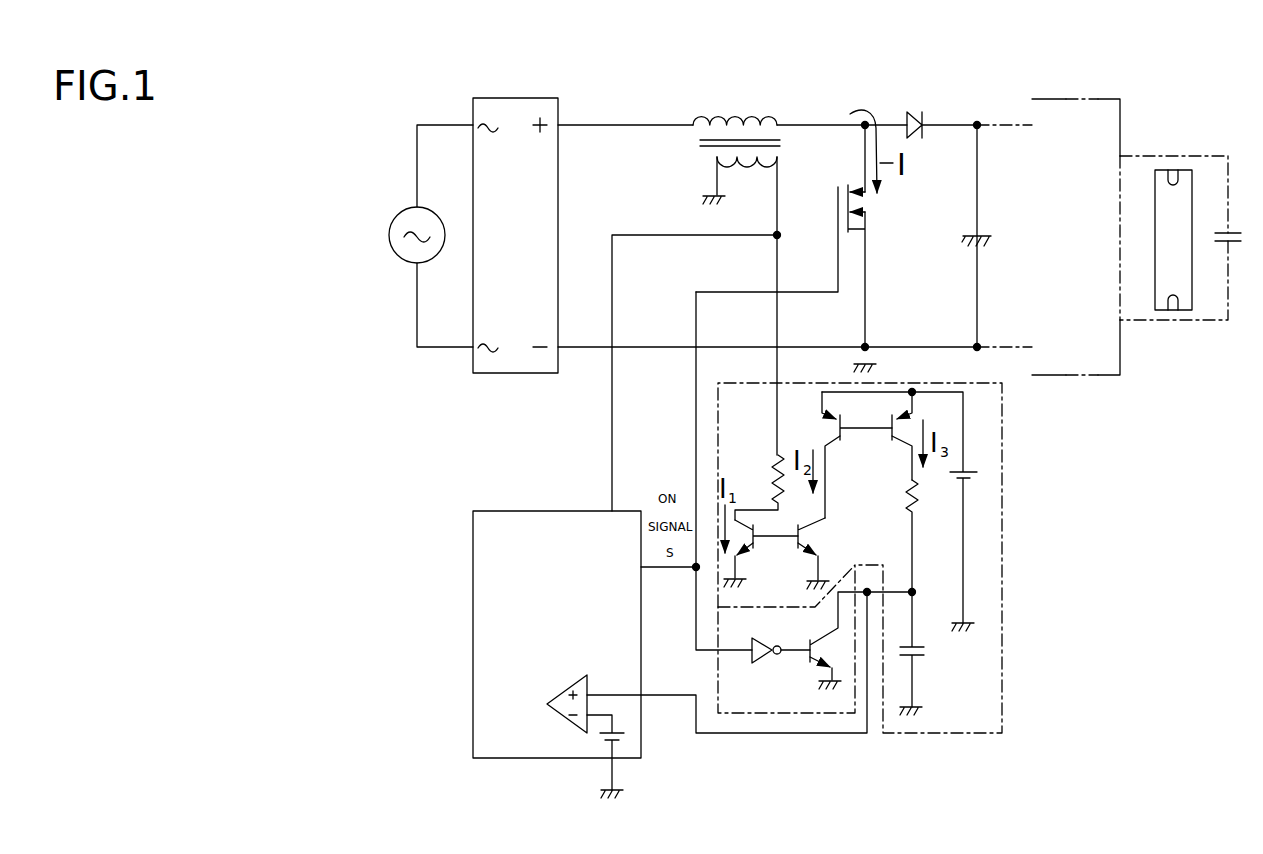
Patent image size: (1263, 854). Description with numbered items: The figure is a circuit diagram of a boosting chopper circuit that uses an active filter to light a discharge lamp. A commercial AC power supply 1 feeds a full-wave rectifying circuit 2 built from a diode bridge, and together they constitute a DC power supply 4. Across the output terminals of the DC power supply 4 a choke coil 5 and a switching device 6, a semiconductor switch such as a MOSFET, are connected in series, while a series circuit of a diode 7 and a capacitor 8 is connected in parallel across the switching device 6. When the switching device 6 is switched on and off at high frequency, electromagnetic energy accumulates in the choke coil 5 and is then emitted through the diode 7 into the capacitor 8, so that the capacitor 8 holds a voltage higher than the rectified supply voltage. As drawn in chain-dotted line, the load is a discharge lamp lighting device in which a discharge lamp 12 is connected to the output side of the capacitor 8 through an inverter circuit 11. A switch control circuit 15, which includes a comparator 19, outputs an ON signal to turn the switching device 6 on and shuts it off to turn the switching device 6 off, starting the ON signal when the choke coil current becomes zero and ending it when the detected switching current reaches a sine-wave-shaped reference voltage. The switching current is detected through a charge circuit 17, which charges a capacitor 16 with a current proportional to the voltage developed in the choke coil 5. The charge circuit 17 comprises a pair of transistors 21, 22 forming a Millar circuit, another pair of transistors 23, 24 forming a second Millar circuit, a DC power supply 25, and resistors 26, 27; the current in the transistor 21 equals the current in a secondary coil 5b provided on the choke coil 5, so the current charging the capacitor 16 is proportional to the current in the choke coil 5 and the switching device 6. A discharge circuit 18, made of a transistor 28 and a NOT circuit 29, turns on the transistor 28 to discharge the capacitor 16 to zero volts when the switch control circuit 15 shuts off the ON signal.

The commercial AC power supply 1 is at (408, 214).
The full-wave rectifying circuit 2 is at (552, 110).
The DC power supply 4 is at (578, 150).
The choke coil 5 is at (743, 116).
The secondary coil 5b is at (740, 306).
The switching device 6 is at (846, 182).
The diode 7 is at (912, 117).
The capacitor 8 is at (975, 232).
The inverter circuit 11 is at (1115, 95).
The discharge lamp 12 is at (1195, 192).
The switch control circuit 15 is at (472, 506).
The capacitor 16 is at (915, 652).
The charge circuit 17 is at (1007, 526).
The discharge circuit 18 is at (788, 720).
The comparator 19 is at (568, 714).
The switching device 21 is at (742, 549).
The switching device 22 is at (806, 538).
The switching device 23 is at (832, 443).
The switching device 24 is at (901, 443).
The DC power supply 25 is at (975, 470).
The resistor 26 is at (772, 470).
The resistor 27 is at (915, 508).
The transistor 28 is at (807, 662).
The NOT circuit 29 is at (755, 663).